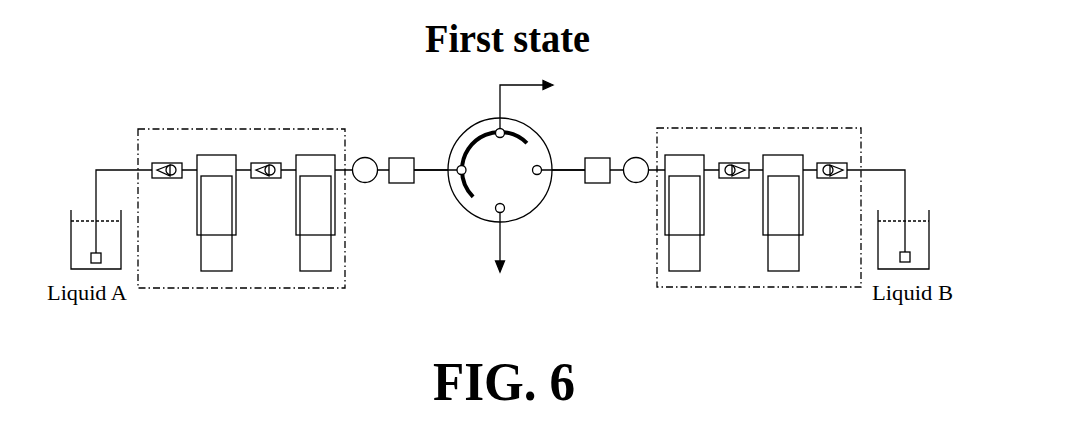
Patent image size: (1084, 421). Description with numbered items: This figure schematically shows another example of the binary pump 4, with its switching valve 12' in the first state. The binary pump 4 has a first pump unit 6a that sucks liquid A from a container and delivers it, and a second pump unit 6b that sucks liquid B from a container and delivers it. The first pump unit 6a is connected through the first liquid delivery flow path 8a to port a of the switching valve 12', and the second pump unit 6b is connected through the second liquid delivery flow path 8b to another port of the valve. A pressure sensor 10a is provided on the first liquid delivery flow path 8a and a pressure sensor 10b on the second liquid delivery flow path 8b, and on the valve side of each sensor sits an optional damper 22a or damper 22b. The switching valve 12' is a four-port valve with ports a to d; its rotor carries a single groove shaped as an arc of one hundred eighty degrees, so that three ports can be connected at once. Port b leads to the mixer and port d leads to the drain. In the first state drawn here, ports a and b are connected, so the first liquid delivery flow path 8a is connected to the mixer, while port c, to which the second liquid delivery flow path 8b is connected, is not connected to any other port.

The binary pump 4 is at (722, 76).
The first pump unit 6a is at (253, 125).
The second pump unit 6b is at (768, 126).
The first liquid delivery flow path 8a is at (428, 175).
The second liquid delivery flow path 8b is at (570, 175).
The pressure sensor 10a is at (366, 158).
The pressure sensor 10b is at (630, 158).
The damper 22a is at (410, 158).
The damper 22b is at (600, 158).
The switching valve 12' is at (535, 187).